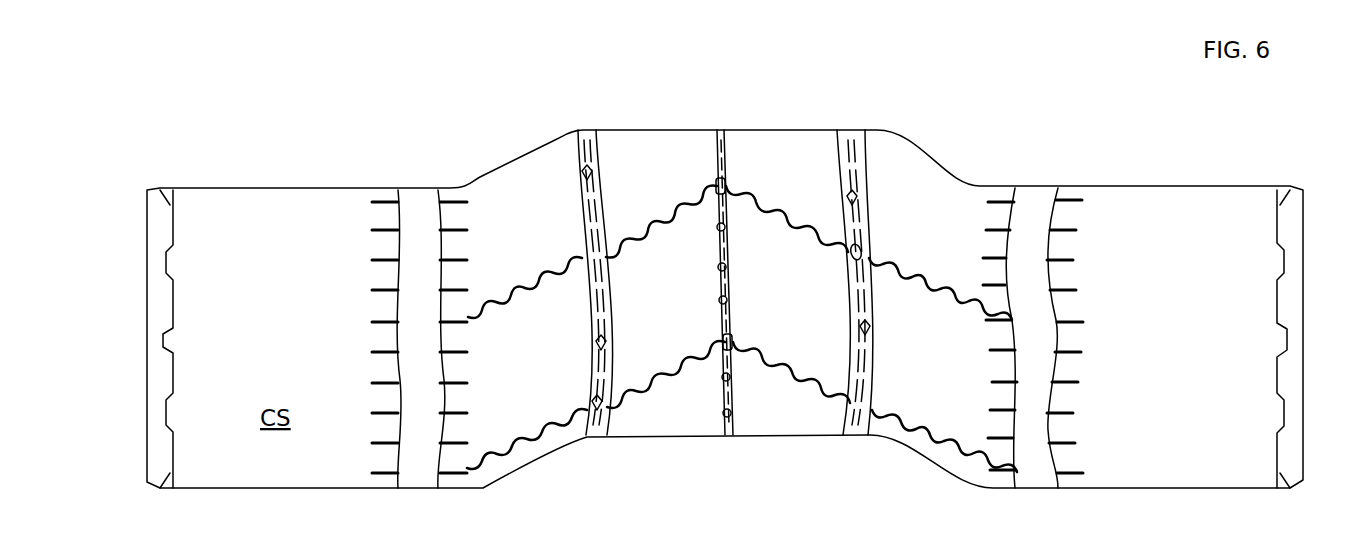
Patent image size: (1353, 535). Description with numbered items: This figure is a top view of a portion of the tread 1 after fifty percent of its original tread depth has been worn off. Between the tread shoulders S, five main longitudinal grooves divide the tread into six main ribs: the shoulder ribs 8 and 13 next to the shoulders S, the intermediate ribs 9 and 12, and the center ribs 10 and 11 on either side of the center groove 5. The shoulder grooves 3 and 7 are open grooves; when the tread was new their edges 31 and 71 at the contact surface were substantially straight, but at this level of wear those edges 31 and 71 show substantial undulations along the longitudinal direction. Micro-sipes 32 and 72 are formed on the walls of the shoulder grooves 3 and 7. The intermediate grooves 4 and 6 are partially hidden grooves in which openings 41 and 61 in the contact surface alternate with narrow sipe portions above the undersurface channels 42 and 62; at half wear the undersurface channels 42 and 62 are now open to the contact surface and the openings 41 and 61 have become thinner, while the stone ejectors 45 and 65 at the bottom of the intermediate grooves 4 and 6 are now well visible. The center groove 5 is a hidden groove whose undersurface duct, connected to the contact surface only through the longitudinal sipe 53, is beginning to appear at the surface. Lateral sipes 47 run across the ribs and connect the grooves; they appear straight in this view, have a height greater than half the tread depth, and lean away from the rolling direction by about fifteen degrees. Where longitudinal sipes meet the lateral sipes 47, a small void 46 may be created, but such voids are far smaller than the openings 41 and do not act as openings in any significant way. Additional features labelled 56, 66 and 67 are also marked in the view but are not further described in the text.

The fabric assembly 1 is at (146, 150).
The shoulder groove 3 is at (385, 269).
The intermediate groove 4 is at (592, 122).
The center groove 5 is at (727, 112).
The intermediate groove 6 is at (862, 108).
The shoulder groove 7 is at (1066, 286).
The shoulder rib 8 is at (232, 205).
The intermediate rib 9 is at (500, 220).
The center rib 10 is at (670, 152).
The center rib 11 is at (790, 158).
The intermediate rib 12 is at (938, 182).
The shoulder rib 13 is at (1217, 197).
The edge of shoulder groove 31 is at (442, 393).
The micro-sipes 32 is at (437, 200).
The opening 41 is at (585, 139).
The undersurface channel 42 is at (578, 217).
The stone ejector 45 is at (597, 273).
The small void 46 is at (597, 405).
The lateral sipes 47 is at (560, 422).
The longitudinal sipe 53 is at (720, 290).
The seam crossing bead 56 is at (717, 185).
The opening 61 is at (845, 223).
The undersurface channel 62 is at (848, 375).
The stone ejector 65 is at (857, 397).
The seam crossing bead 66 is at (860, 250).
The seam junction 67 is at (897, 423).
The edge of shoulder groove 71 is at (1012, 305).
The micro-sipes 72 is at (1013, 222).
The tread shoulder S is at (168, 300).